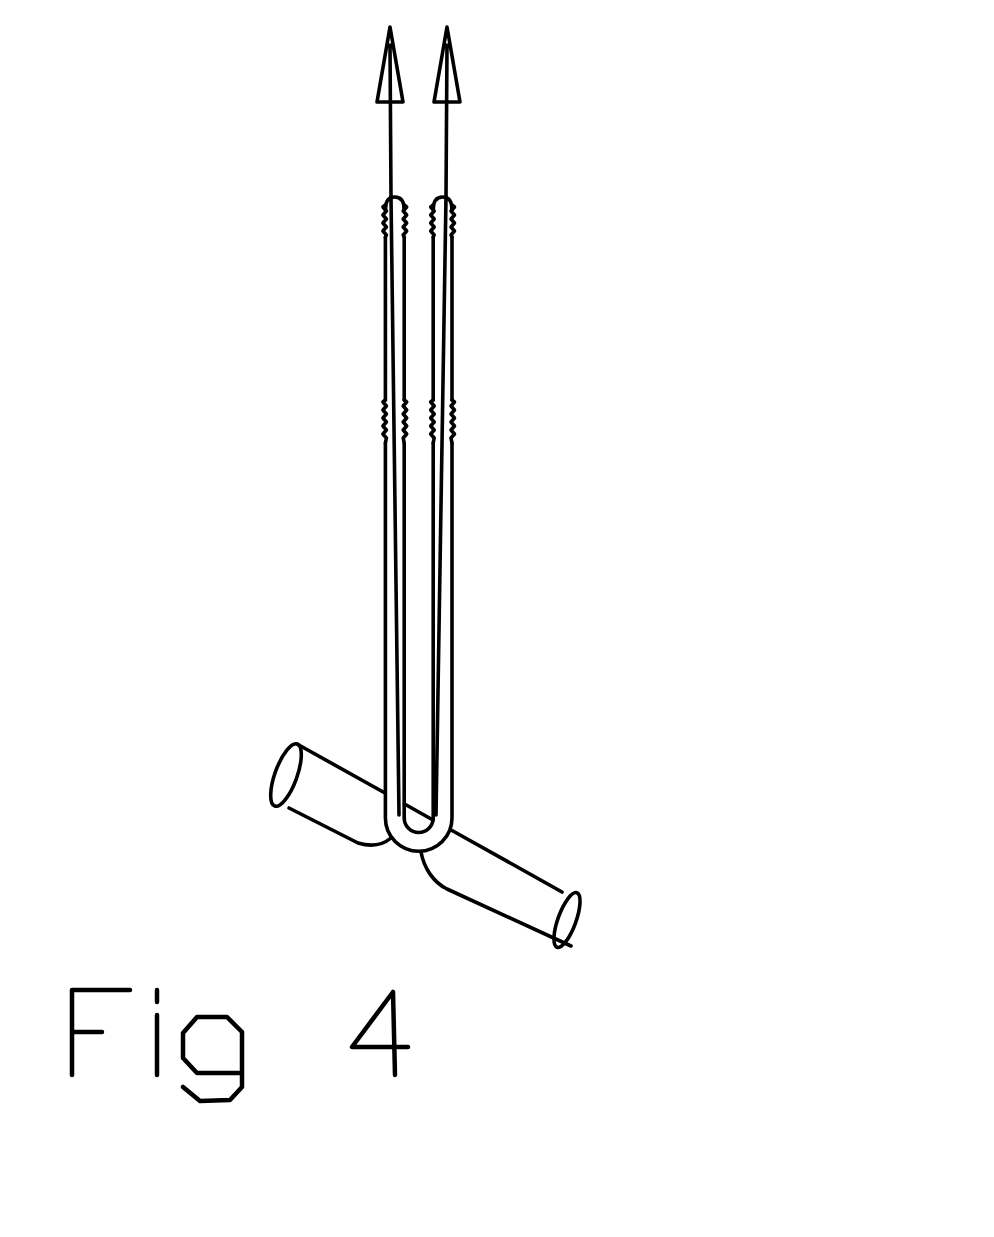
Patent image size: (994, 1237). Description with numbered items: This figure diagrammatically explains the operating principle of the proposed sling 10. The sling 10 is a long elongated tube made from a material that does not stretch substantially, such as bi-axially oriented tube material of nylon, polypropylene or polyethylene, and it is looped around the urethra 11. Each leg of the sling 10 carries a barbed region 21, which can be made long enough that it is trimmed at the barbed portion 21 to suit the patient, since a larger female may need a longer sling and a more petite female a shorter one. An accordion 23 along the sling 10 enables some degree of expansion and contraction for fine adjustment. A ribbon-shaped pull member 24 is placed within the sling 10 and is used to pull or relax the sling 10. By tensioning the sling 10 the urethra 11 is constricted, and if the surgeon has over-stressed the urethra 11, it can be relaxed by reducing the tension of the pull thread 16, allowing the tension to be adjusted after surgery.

The sling 10 is at (452, 611).
The urethra 11 is at (567, 897).
The pull thread 16 is at (447, 140).
The barbed region 21 is at (383, 212).
The accordion 23 is at (382, 425).
The pull member 24 is at (442, 465).